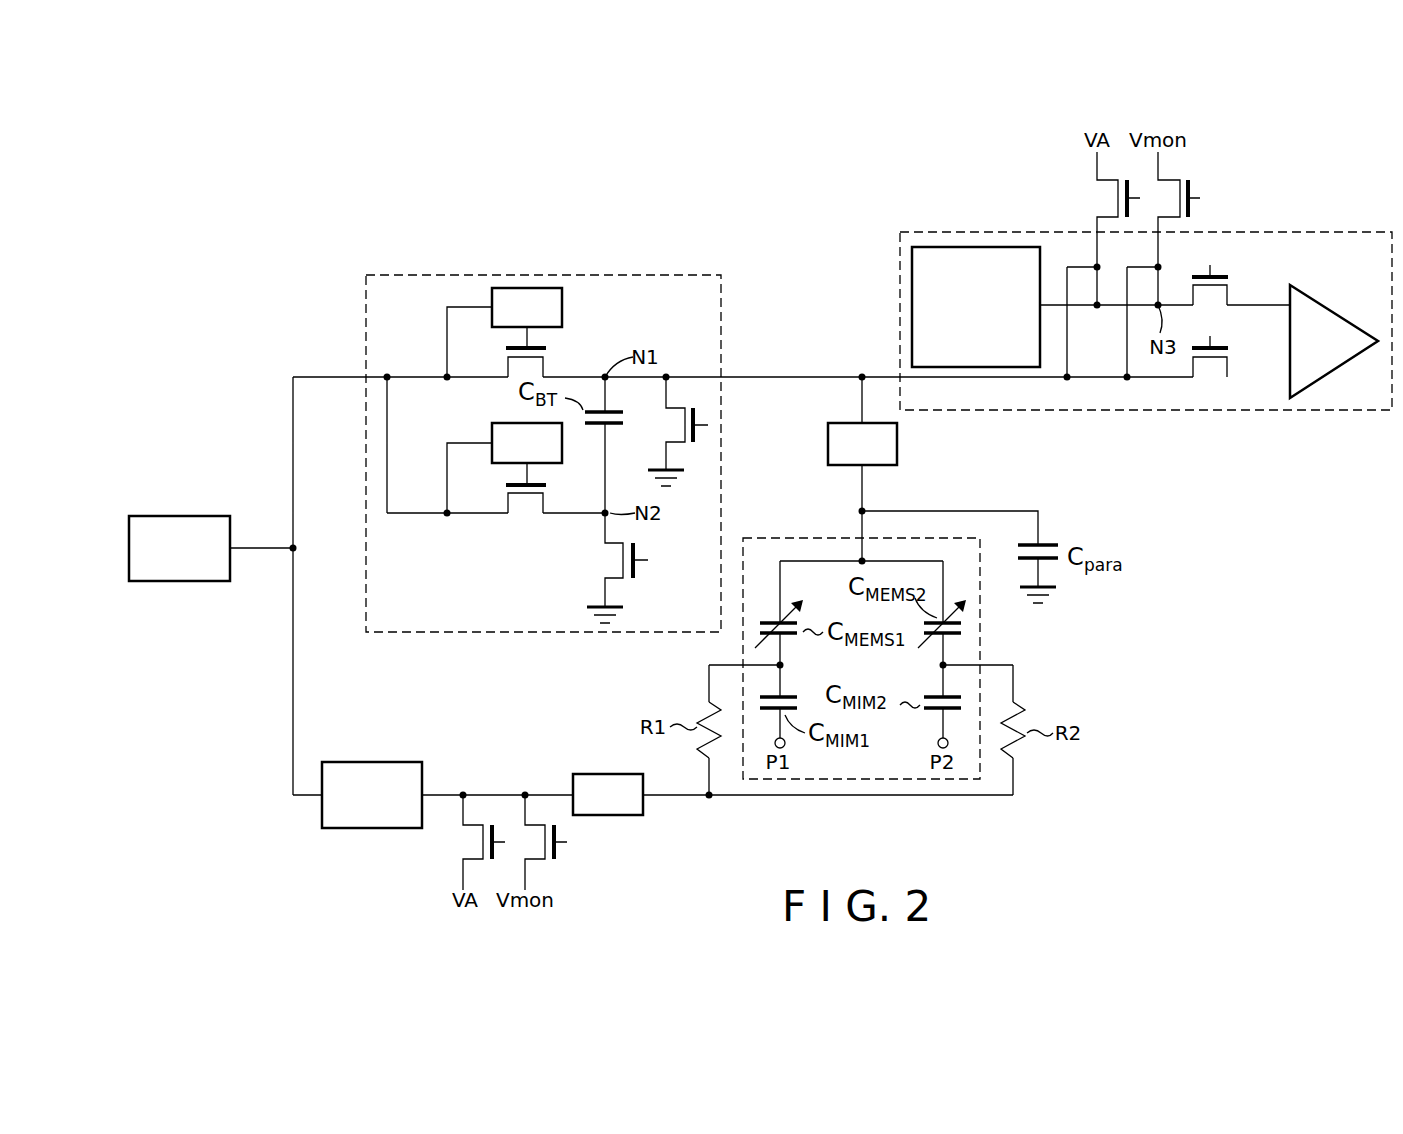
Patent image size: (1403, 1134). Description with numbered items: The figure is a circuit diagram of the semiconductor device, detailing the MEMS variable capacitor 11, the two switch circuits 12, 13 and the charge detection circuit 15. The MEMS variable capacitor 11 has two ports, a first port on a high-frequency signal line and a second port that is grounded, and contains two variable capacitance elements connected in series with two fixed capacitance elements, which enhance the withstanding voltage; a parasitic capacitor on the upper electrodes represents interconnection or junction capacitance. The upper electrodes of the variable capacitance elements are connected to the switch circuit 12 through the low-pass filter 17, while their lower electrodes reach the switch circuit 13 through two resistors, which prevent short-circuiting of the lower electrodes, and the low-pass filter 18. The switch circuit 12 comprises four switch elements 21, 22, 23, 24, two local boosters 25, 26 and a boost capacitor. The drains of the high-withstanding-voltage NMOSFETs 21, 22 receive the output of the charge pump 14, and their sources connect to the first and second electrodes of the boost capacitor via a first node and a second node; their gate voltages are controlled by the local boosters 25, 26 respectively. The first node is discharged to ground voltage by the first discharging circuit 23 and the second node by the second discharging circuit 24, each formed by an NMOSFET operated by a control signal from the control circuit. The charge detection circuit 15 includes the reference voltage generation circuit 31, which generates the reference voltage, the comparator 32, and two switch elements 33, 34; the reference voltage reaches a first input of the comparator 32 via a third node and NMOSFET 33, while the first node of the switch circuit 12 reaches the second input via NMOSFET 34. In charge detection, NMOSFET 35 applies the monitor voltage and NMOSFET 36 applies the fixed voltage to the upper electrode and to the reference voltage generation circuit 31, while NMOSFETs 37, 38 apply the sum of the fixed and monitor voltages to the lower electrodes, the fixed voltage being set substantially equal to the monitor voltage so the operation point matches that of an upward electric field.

The MEMS variable capacitor 11 is at (815, 538).
The switch circuit 12 is at (450, 275).
The switch circuit 13 is at (371, 762).
The charge pump 14 is at (180, 516).
The charge detection circuit 15 is at (1238, 412).
The low-pass filter 17 is at (897, 444).
The low-pass filter 18 is at (594, 774).
The switch element (NMOSFET) 21 is at (548, 370).
The switch element (NMOSFET) 22 is at (525, 517).
The first discharging circuit 23 is at (665, 432).
The second discharging circuit 24 is at (648, 573).
The local booster 25 is at (562, 307).
The local booster 26 is at (492, 433).
The reference voltage generation circuit 31 is at (990, 247).
The comparator 32 is at (1325, 310).
The switch element (NMOSFET) 33 is at (1232, 290).
The switch element (NMOSFET) 34 is at (1232, 365).
The NMOSFET 35 is at (1200, 190).
The NMOSFET 36 is at (1091, 198).
The NMOSFET 37 is at (563, 852).
The NMOSFET 38 is at (455, 843).